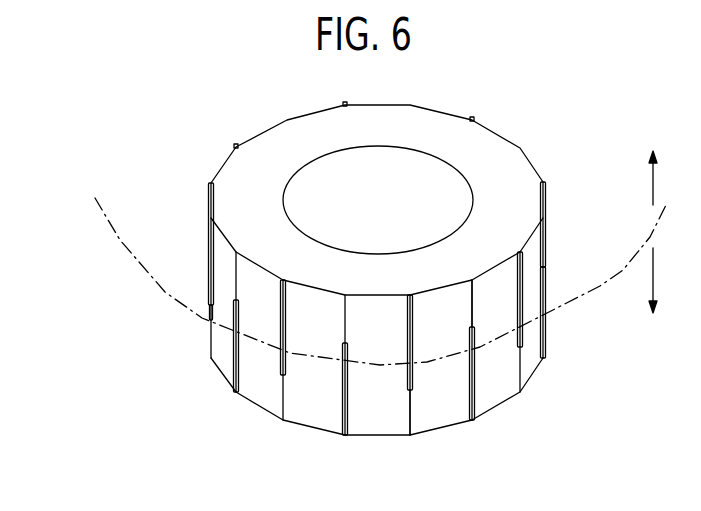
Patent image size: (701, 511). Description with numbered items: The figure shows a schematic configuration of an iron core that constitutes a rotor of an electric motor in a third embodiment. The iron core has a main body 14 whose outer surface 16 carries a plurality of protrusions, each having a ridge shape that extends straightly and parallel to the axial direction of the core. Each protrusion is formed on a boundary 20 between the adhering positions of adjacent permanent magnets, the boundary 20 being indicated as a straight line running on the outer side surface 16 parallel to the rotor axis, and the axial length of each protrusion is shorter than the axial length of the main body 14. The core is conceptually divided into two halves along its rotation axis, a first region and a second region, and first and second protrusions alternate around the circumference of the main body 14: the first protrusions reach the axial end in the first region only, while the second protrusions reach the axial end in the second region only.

The main body 14 is at (457, 129).
The outer surface 16 is at (492, 379).
The boundary 20 is at (467, 312).